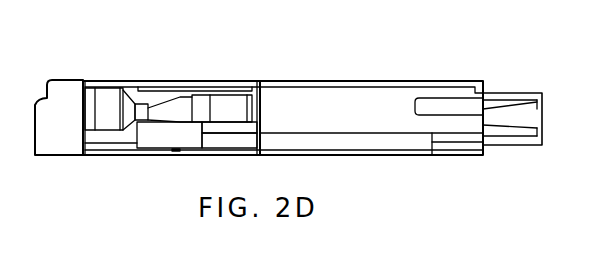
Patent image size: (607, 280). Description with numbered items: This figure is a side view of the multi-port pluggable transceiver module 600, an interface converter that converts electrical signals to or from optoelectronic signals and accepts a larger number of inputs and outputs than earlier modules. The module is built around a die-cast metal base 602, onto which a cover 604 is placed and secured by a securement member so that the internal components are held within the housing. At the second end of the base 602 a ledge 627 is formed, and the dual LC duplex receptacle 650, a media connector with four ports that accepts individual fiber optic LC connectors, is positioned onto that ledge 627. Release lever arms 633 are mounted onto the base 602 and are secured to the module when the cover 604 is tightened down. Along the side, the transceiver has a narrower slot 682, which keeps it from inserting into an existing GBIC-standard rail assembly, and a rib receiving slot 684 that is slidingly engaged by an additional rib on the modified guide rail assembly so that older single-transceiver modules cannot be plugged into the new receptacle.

The multi-port pluggable transceiver module 600 is at (346, 72).
The base 602 is at (390, 155).
The cover 604 is at (370, 80).
The release lever arms 633 is at (130, 88).
The ledge 627 is at (103, 155).
The dual LC duplex receptacle 650 is at (60, 155).
The slot 682 is at (478, 135).
The rib receiving slot 684 is at (468, 107).